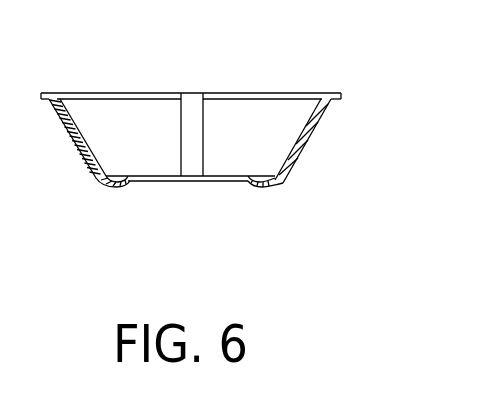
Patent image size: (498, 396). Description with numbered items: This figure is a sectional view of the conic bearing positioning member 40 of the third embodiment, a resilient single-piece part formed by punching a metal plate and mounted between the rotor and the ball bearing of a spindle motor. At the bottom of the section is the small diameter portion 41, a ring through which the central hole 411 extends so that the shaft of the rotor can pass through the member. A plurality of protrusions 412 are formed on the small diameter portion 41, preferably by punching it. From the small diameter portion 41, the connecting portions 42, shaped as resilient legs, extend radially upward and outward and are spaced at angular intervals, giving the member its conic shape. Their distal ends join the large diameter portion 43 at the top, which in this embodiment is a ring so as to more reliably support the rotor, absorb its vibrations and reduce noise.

The bearing positioning member 40 is at (305, 82).
The small diameter portion 41 is at (256, 186).
The central hole 411 is at (213, 181).
The protrusions 412 is at (128, 184).
The connecting portion 42 is at (306, 151).
The large diameter portion 43 is at (68, 93).